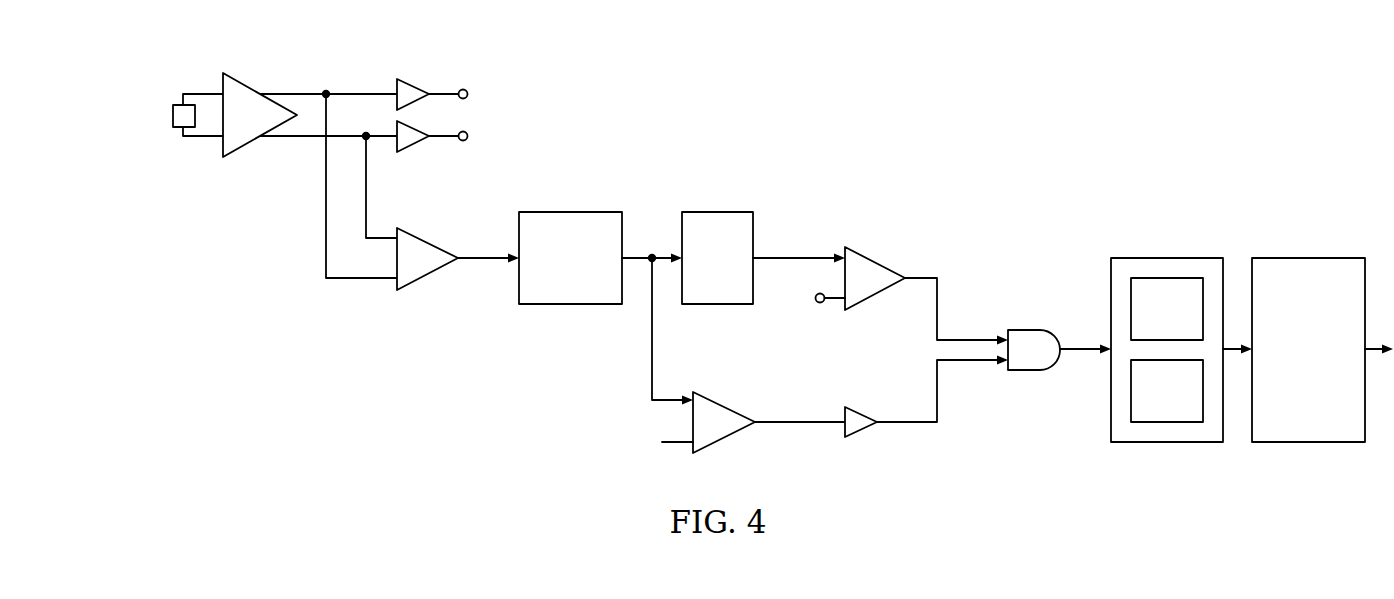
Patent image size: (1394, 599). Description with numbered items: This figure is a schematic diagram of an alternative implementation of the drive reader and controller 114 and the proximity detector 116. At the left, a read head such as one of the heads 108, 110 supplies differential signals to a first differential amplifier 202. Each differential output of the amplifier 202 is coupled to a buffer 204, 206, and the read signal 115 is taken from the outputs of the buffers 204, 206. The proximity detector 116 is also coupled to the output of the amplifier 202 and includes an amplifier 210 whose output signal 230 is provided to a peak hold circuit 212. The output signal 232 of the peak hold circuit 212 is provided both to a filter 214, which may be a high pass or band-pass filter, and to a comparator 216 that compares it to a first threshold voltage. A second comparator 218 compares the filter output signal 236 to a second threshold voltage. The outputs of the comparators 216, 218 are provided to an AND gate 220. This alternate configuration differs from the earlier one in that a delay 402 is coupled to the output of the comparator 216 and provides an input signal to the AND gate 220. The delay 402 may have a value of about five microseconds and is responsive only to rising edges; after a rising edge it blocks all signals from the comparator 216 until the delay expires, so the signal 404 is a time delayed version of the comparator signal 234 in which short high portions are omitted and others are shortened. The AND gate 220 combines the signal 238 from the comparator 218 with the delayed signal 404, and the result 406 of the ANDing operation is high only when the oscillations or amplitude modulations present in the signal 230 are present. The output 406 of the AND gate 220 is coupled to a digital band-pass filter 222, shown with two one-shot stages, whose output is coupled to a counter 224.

The head 108 is at (173, 118).
The head 110 is at (147, 106).
The drive reader and controller 114 is at (238, 185).
The read signal 115 is at (468, 91).
The proximity detector 116 is at (941, 209).
The first differential amplifier 202 is at (240, 83).
The buffer 204 is at (417, 83).
The buffer 206 is at (415, 145).
The amplifier 210 is at (428, 275).
The peak hold circuit 212 is at (570, 212).
The filter 214 is at (718, 212).
The comparator 216 is at (723, 440).
The comparator 218 is at (880, 292).
The AND gate 220 is at (1028, 370).
The digital band-pass filter 222 is at (1184, 453).
The counter 224 is at (1327, 380).
The signal 230 is at (490, 255).
The signal 232 is at (649, 329).
The signal 234 is at (798, 423).
The signal 236 is at (793, 257).
The signal 238 is at (967, 337).
The delay 402 is at (863, 432).
The signal 404 is at (980, 363).
The output of the AND gate 406 is at (1077, 345).